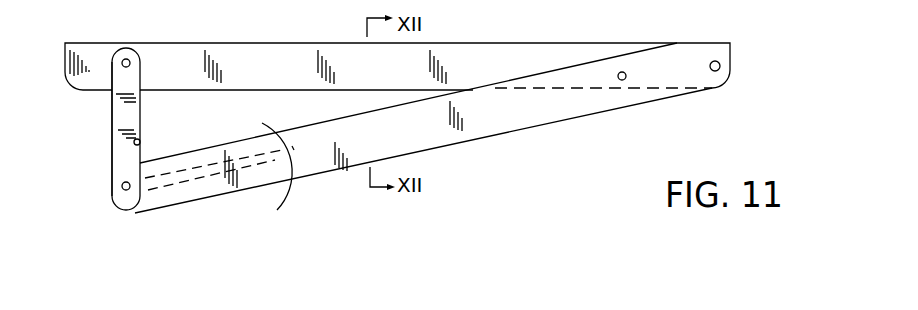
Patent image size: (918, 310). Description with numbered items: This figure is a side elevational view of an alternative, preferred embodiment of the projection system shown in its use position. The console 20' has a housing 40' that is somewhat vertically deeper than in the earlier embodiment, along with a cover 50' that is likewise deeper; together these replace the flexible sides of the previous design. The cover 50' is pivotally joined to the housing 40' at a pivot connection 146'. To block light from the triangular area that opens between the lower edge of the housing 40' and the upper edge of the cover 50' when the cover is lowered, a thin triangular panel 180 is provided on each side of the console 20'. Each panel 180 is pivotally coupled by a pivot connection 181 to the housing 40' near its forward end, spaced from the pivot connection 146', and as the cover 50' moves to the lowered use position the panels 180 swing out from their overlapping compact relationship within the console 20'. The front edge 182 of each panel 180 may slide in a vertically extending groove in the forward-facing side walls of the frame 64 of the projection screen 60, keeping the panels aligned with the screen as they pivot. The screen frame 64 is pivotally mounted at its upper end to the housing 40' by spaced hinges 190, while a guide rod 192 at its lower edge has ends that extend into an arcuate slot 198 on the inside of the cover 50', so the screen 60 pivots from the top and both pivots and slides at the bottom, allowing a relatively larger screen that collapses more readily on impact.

The console 20' is at (667, 134).
The housing 40' is at (397, 51).
The cover 50' is at (423, 128).
The projection screen 60 is at (104, 131).
The frame 64 is at (122, 146).
The pivot connection 146' is at (740, 42).
The triangular panel 180 is at (273, 182).
The pivot connection 181 is at (624, 72).
The front edge 182 is at (141, 142).
The hinges 190 is at (131, 63).
The guide rod 192 is at (126, 191).
The arcuate slot 198 is at (207, 181).